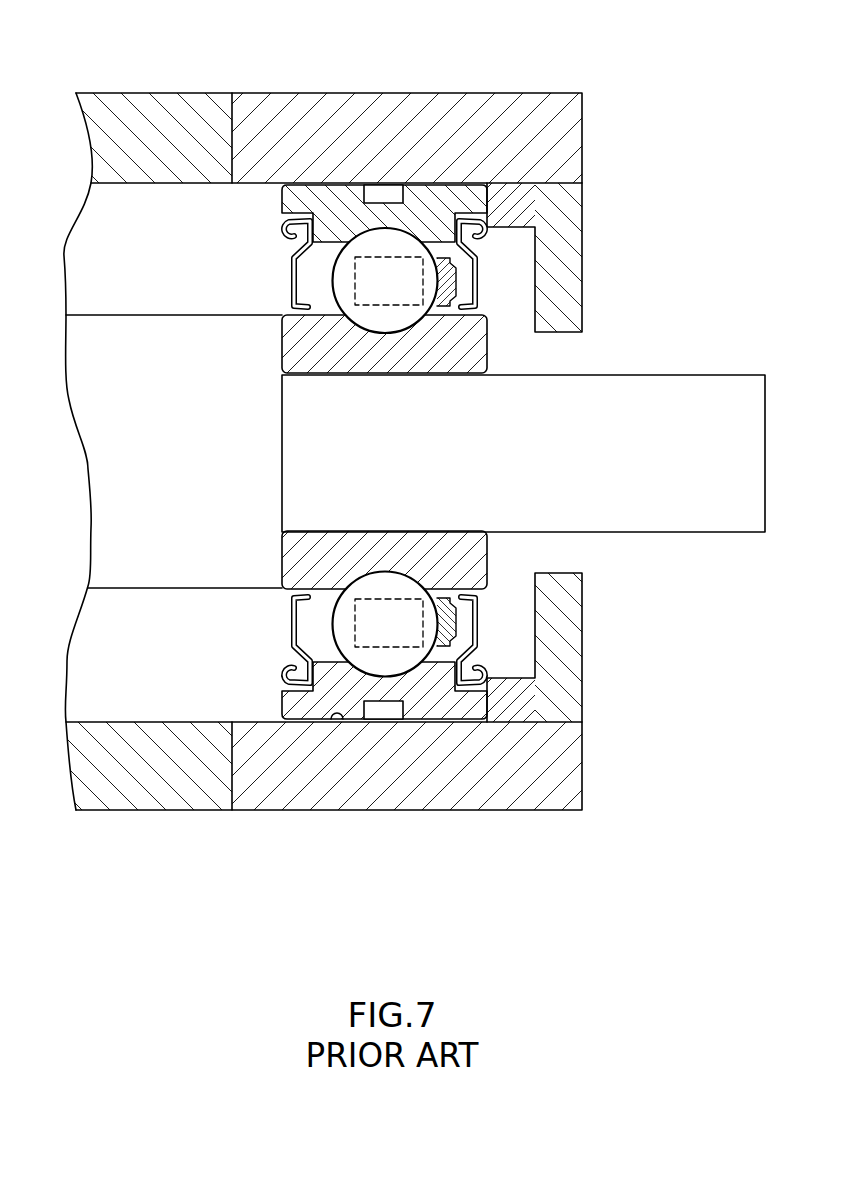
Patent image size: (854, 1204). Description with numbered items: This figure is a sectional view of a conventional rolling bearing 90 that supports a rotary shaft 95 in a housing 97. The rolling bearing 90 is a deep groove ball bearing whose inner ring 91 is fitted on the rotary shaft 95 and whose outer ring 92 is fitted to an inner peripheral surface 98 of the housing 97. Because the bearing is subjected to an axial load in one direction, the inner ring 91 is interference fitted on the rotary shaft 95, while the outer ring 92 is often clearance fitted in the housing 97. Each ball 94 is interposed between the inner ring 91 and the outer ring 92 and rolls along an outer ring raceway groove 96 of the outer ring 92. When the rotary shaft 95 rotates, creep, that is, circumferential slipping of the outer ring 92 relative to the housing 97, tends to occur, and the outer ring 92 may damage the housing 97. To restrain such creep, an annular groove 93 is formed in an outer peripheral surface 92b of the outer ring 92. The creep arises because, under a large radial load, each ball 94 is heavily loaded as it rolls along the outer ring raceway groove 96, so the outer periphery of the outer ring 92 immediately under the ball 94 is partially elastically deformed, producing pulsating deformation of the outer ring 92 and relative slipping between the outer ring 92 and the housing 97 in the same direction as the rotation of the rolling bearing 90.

The rolling bearing 90 is at (383, 745).
The inner ring 91 is at (474, 551).
The outer ring 92 is at (437, 705).
The outer peripheral surface 92b is at (447, 185).
The annular groove 93 is at (395, 173).
The ball 94 is at (342, 285).
The rotary shaft 95 is at (651, 405).
The outer ring raceway groove 96 is at (368, 242).
The housing 97 is at (265, 787).
The inner peripheral surface 98 is at (328, 716).